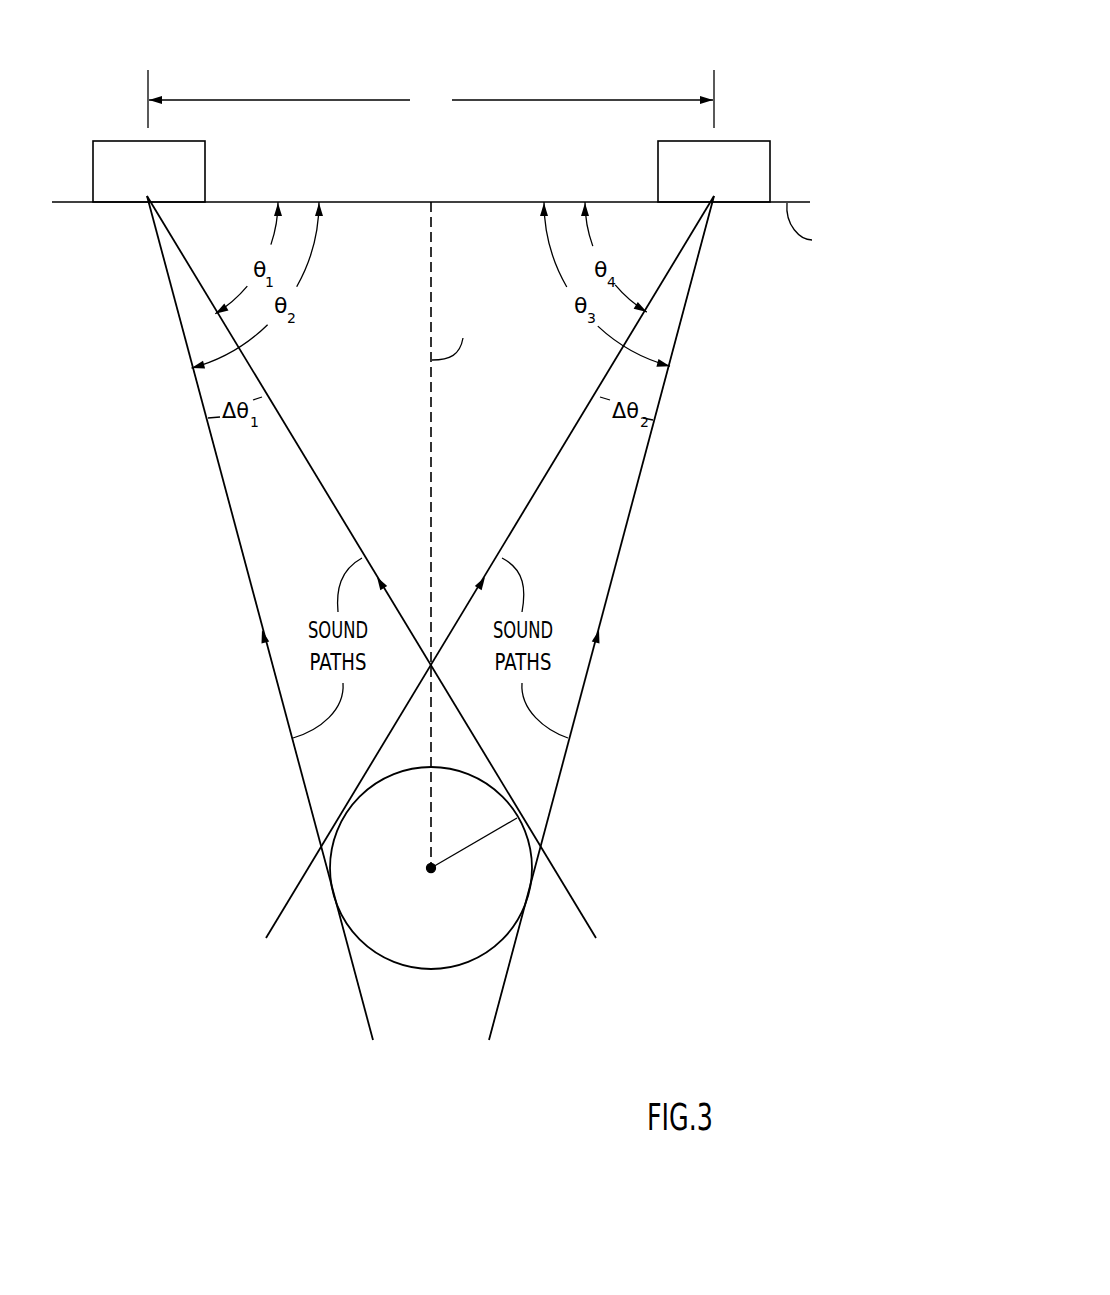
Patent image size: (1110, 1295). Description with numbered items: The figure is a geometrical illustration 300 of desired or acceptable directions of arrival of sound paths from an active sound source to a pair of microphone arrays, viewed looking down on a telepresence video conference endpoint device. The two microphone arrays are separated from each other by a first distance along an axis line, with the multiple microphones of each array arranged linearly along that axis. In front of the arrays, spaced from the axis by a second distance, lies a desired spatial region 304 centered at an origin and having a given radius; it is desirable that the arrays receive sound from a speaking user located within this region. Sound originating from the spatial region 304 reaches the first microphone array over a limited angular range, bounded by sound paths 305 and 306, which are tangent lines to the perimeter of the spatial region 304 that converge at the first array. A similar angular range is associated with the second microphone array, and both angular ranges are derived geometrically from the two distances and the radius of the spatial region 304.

The geometrical illustration 300 is at (763, 38).
The desired spatial region 304 is at (440, 970).
The sound path 305 is at (233, 517).
The sound path 306 is at (325, 493).